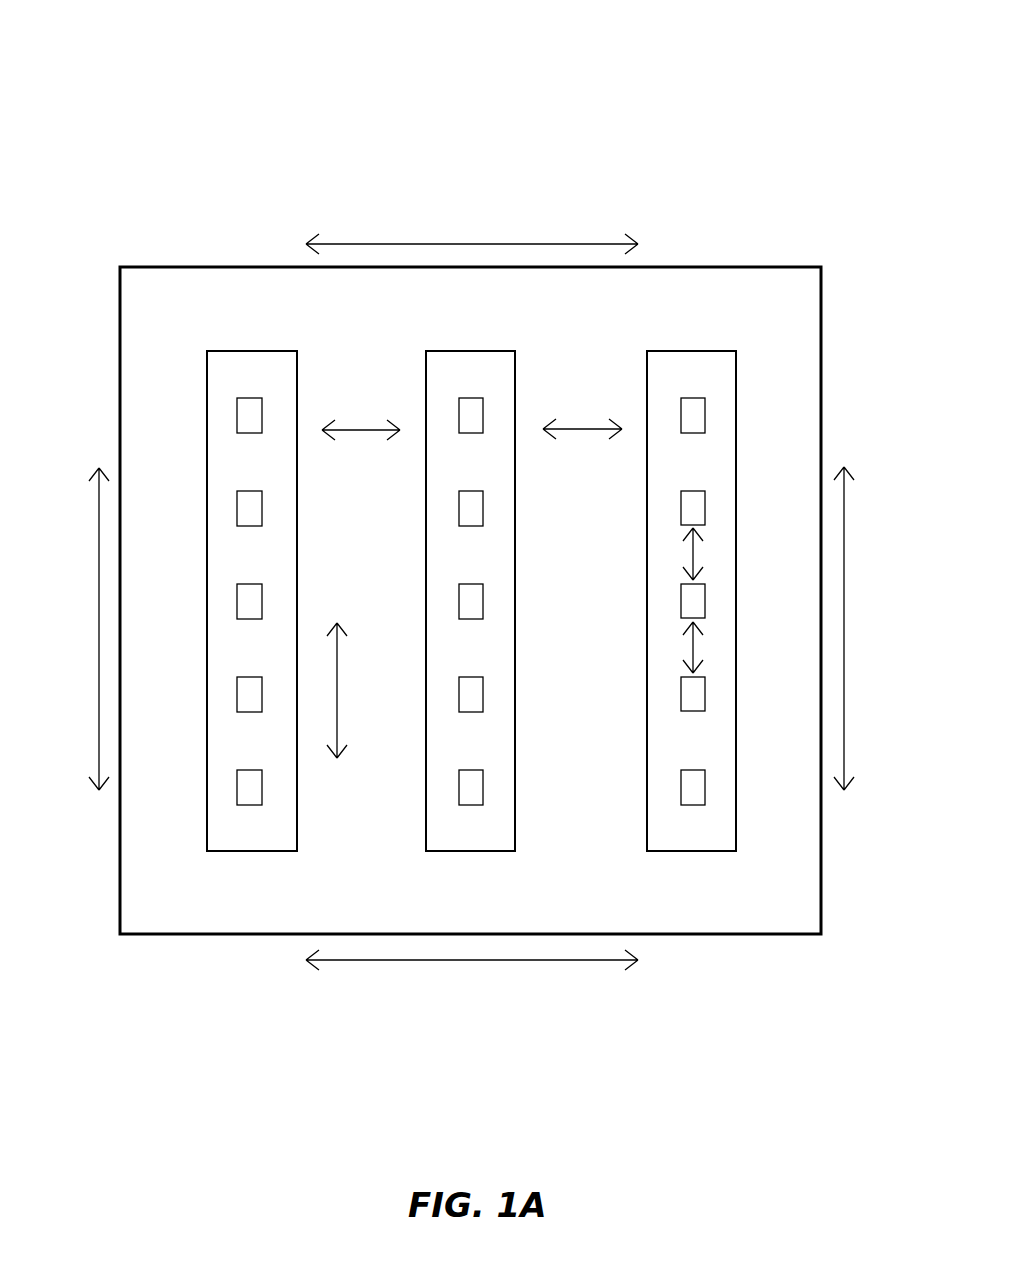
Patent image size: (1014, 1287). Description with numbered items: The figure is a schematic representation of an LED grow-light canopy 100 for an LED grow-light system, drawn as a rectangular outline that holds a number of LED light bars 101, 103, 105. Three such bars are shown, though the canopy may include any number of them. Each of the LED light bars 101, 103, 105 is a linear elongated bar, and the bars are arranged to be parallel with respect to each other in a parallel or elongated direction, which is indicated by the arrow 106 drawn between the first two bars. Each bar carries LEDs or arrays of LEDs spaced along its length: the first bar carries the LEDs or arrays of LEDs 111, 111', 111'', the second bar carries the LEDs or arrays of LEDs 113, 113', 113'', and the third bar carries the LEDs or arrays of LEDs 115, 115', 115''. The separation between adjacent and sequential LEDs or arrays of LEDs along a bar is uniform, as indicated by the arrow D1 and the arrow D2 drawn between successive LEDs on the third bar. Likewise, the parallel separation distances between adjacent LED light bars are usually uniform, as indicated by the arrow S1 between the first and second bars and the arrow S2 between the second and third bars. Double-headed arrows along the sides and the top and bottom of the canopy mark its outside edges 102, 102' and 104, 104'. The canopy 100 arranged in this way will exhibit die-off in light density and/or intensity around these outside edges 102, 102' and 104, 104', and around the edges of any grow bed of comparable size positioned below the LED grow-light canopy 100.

The LED grow-light canopy 100 is at (168, 66).
The LED light bar 101 is at (252, 851).
The LED light bar 103 is at (468, 851).
The LED light bar 105 is at (691, 851).
The outside edge 102 is at (60, 629).
The outside edge 102' is at (881, 628).
The outside edge 104 is at (472, 218).
The outside edge 104' is at (472, 995).
The arrow indicating parallel or elongated direction 106 is at (338, 690).
The LED or array of LEDs 111 is at (197, 404).
The LED or array of LEDs 111' is at (195, 497).
The LED or array of LEDs 111'' is at (196, 590).
The LED or array of LEDs 113 is at (521, 501).
The LED or array of LEDs 113' is at (524, 594).
The LED or array of LEDs 113'' is at (527, 687).
The LED or array of LEDs 115 is at (741, 502).
The LED or array of LEDs 115' is at (744, 594).
The LED or array of LEDs 115'' is at (747, 687).
The arrow indicating parallel separation between adjacent LED light bars S1 is at (361, 430).
The arrow indicating parallel separation between adjacent LED light bars S2 is at (580, 429).
The arrow indicating separation between adjacent LEDs D1 is at (697, 553).
The arrow indicating separation between adjacent LEDs D2 is at (697, 647).